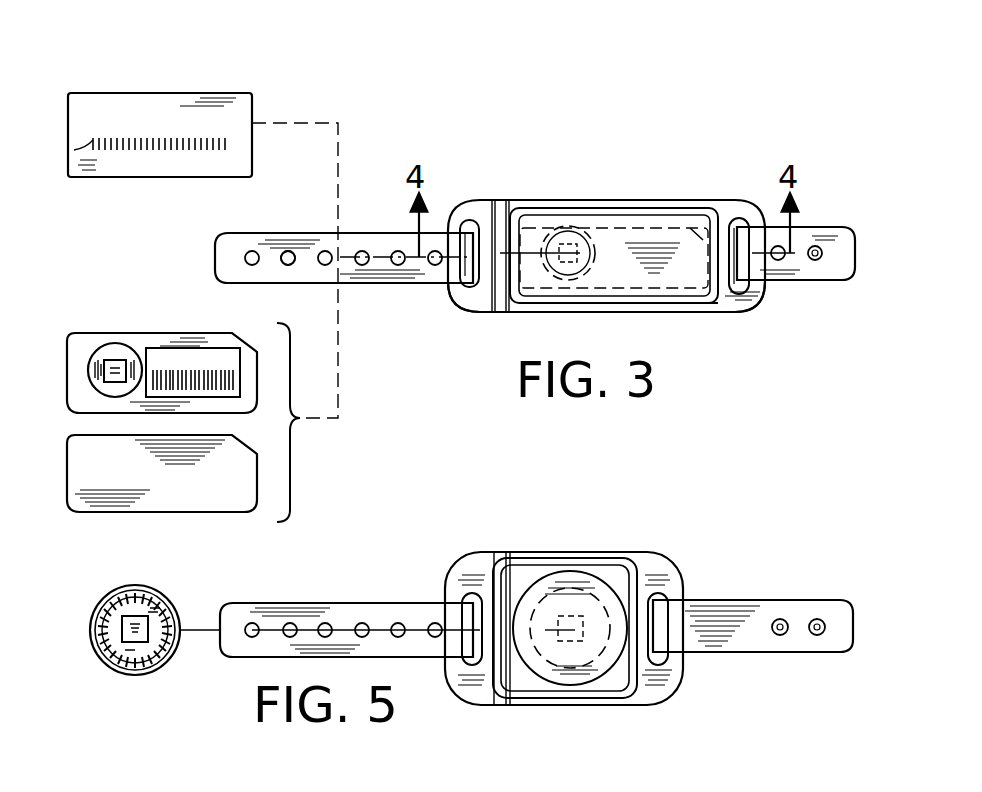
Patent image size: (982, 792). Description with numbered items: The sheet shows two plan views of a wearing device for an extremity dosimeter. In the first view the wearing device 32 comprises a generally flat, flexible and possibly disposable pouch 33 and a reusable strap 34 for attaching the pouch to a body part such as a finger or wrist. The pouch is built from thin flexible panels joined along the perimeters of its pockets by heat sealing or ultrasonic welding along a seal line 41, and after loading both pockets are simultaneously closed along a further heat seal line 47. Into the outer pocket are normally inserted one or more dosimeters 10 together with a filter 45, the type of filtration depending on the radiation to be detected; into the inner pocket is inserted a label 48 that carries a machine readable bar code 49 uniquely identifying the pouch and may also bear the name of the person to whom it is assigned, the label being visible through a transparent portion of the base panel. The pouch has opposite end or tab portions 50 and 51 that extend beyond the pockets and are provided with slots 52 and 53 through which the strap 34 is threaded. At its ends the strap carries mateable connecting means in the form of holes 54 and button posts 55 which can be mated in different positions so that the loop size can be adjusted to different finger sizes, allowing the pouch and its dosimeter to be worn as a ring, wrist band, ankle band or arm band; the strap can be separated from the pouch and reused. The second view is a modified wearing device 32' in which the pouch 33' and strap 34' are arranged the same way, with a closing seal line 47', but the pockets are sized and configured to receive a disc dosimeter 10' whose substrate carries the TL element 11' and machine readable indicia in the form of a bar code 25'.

In FIG. 3, the extremity dosimeter 10 is at (161, 346).
In FIG. 5, the TL element 11' is at (173, 655).
In FIG. 5, the linear bar code 25' is at (173, 615).
In FIG. 3, the wearing device 32 is at (606, 218).
In FIG. 5, the wearing device 32' is at (544, 602).
In FIG. 3, the pouch 33 is at (614, 214).
In FIG. 5, the pouch 33' is at (596, 598).
In FIG. 3, the strap 34 is at (321, 243).
In FIG. 5, the strap 34' is at (753, 600).
In FIG. 3, the heat seal line 41 is at (690, 308).
In FIG. 3, the filter 45 is at (120, 516).
In FIG. 3, the heat seal line 47 is at (547, 215).
In FIG. 5, the heat seal line 47' is at (570, 593).
In FIG. 3, the label 48 is at (112, 88).
In FIG. 3, the machine readable bar code 49 is at (92, 142).
In FIG. 3, the end portion 50 is at (472, 312).
In FIG. 3, the end portion 51 is at (758, 295).
In FIG. 3, the slot 52 is at (466, 300).
In FIG. 3, the slot 53 is at (738, 218).
In FIG. 3, the holes 54 is at (291, 250).
In FIG. 3, the button posts 55 is at (822, 255).
In FIG. 5, the disc dosimeter 10' is at (150, 656).